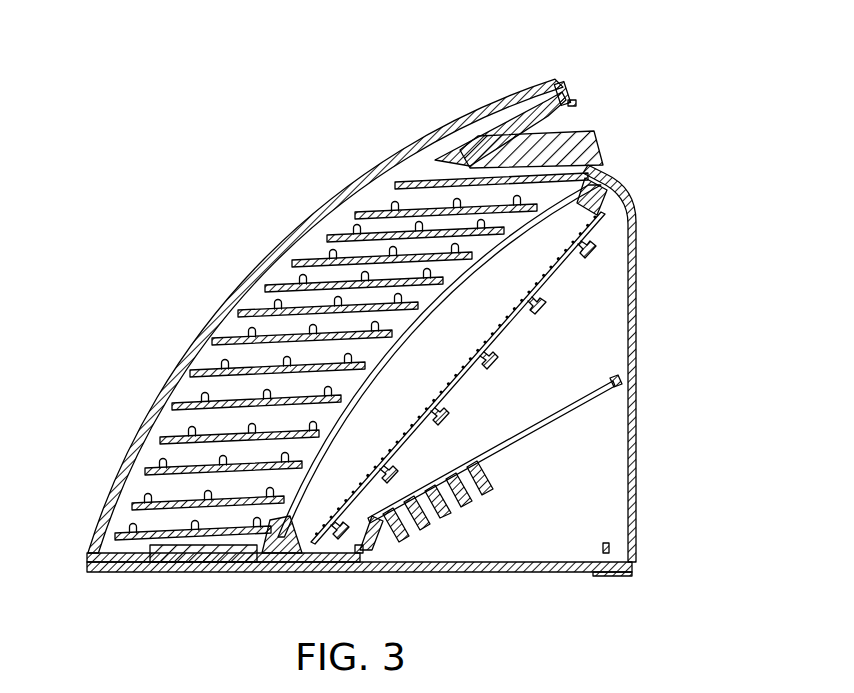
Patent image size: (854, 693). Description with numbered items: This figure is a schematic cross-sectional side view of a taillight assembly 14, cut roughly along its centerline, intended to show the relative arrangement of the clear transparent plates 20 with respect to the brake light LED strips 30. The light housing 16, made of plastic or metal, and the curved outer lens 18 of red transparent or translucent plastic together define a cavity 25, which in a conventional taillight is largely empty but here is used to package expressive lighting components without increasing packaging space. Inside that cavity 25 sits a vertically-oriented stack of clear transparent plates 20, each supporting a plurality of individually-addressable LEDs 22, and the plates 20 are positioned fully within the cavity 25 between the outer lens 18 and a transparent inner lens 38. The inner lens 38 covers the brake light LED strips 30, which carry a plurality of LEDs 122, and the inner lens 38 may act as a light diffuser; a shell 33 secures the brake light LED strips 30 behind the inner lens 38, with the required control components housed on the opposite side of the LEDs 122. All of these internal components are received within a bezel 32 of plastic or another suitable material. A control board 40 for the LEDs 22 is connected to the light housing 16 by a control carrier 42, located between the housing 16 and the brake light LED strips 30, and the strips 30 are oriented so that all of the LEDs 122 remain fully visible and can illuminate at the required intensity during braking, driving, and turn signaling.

The taillight assembly 14 is at (228, 192).
The light housing 16 is at (638, 365).
The outer lens 18 is at (510, 93).
The clear transparent plate 20 is at (321, 356).
The individually-addressable LEDs 22 is at (285, 459).
The cavity 25 is at (208, 352).
The brake light LED strips 30 is at (548, 284).
The bezel 32 is at (571, 130).
The shell 33 is at (601, 202).
The inner lens 38 is at (491, 247).
The control board 40 is at (545, 425).
The control carrier 42 is at (380, 537).
The LEDs 122 is at (483, 356).